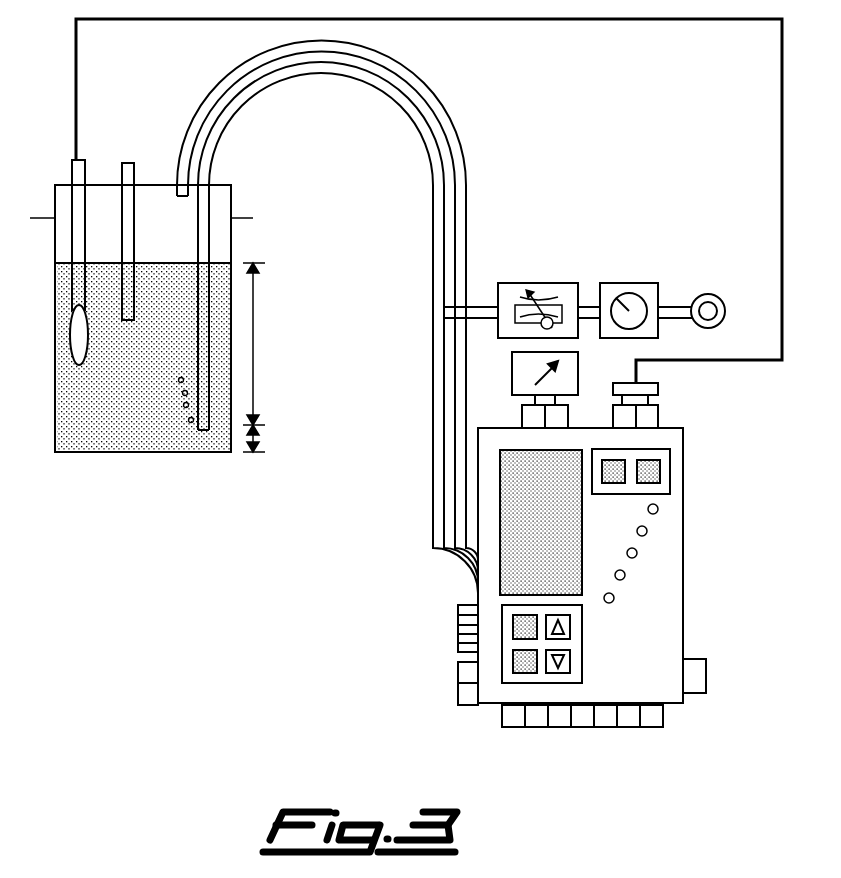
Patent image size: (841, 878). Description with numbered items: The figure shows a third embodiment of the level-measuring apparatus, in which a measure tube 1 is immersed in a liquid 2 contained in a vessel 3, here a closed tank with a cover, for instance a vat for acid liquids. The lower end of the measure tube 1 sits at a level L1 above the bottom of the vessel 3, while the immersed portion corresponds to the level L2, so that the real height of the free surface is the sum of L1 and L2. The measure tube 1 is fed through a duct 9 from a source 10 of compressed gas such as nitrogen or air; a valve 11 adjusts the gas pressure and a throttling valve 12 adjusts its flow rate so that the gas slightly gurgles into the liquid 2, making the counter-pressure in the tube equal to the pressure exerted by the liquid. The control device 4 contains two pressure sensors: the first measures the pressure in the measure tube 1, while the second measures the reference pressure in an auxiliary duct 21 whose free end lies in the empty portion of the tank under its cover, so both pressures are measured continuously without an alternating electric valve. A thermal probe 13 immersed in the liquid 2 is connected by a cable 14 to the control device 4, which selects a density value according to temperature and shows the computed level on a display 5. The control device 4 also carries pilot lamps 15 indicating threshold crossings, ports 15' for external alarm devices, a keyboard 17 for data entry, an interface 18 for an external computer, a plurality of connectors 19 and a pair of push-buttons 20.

The measure tube 1 is at (440, 525).
The liquid 2 is at (136, 430).
The vessel 3 is at (55, 245).
The control device 4 is at (672, 614).
The display 5 is at (507, 460).
The duct 9 is at (672, 313).
The source of compressed gasses 10 is at (721, 296).
The valve 11 is at (610, 290).
The throttling valve 12 is at (557, 292).
The thermal probe 13 is at (78, 340).
The cable 14 is at (75, 112).
The pilot lamps 15 is at (663, 553).
The ports 15' is at (445, 644).
The keyboard 17 is at (502, 678).
The interface 18 is at (693, 677).
The connectors 19 is at (537, 720).
The push-buttons 20 is at (672, 477).
The auxiliary duct 21 is at (461, 188).
The level L1 is at (271, 442).
The level L2 is at (265, 344).